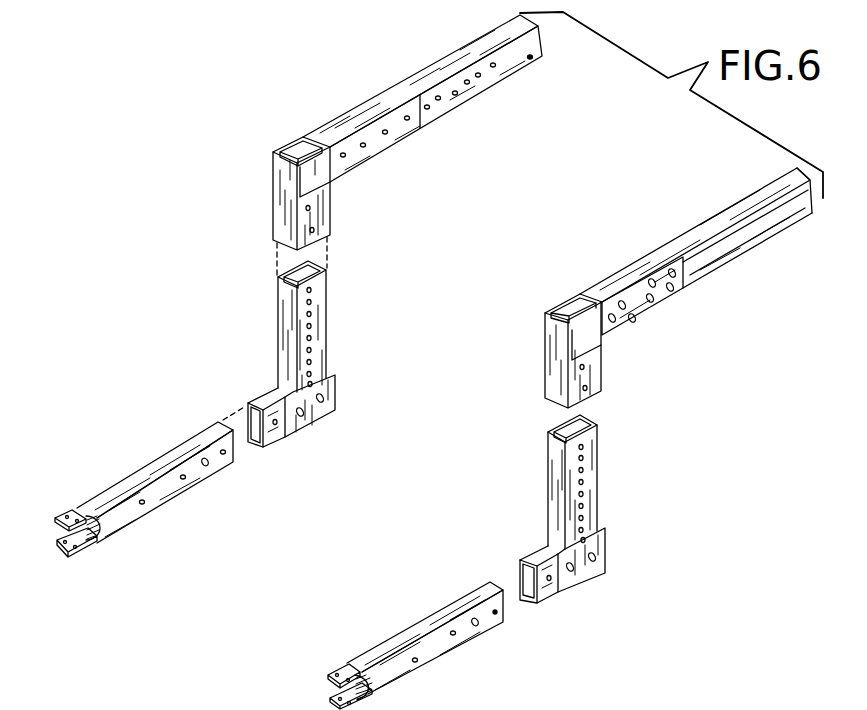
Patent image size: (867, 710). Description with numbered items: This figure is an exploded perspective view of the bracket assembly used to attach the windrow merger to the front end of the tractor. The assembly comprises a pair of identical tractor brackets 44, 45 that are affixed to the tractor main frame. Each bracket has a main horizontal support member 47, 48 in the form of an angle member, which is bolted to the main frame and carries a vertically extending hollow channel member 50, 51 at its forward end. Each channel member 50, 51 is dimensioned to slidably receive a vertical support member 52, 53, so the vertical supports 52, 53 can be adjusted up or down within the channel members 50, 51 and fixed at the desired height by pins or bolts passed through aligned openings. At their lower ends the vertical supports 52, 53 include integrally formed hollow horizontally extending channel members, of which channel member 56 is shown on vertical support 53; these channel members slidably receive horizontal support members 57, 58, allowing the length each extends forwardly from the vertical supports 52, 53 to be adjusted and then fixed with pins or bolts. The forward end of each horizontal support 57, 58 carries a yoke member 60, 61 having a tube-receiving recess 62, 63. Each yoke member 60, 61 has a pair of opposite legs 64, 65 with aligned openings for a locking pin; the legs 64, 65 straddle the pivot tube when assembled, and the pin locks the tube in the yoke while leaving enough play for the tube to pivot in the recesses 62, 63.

The tractor bracket 44 is at (256, 179).
The tractor bracket 45 is at (536, 299).
The main horizontal support member 47 is at (432, 60).
The main horizontal support member 48 is at (692, 228).
The vertically extending hollow channel member 50 is at (277, 207).
The vertically extending hollow channel member 51 is at (546, 364).
The vertical support member 52 is at (280, 315).
The vertical support member 53 is at (597, 478).
The hollow horizontally extending channel member 56 is at (530, 554).
The horizontal support member 57 is at (181, 445).
The horizontal support member 58 is at (443, 612).
The yoke member 60 is at (47, 528).
The yoke member 61 is at (320, 684).
The tube-receiving recess 62 is at (95, 541).
The tube-receiving recess 63 is at (370, 696).
The legs 64 is at (66, 514).
The legs 65 is at (338, 672).